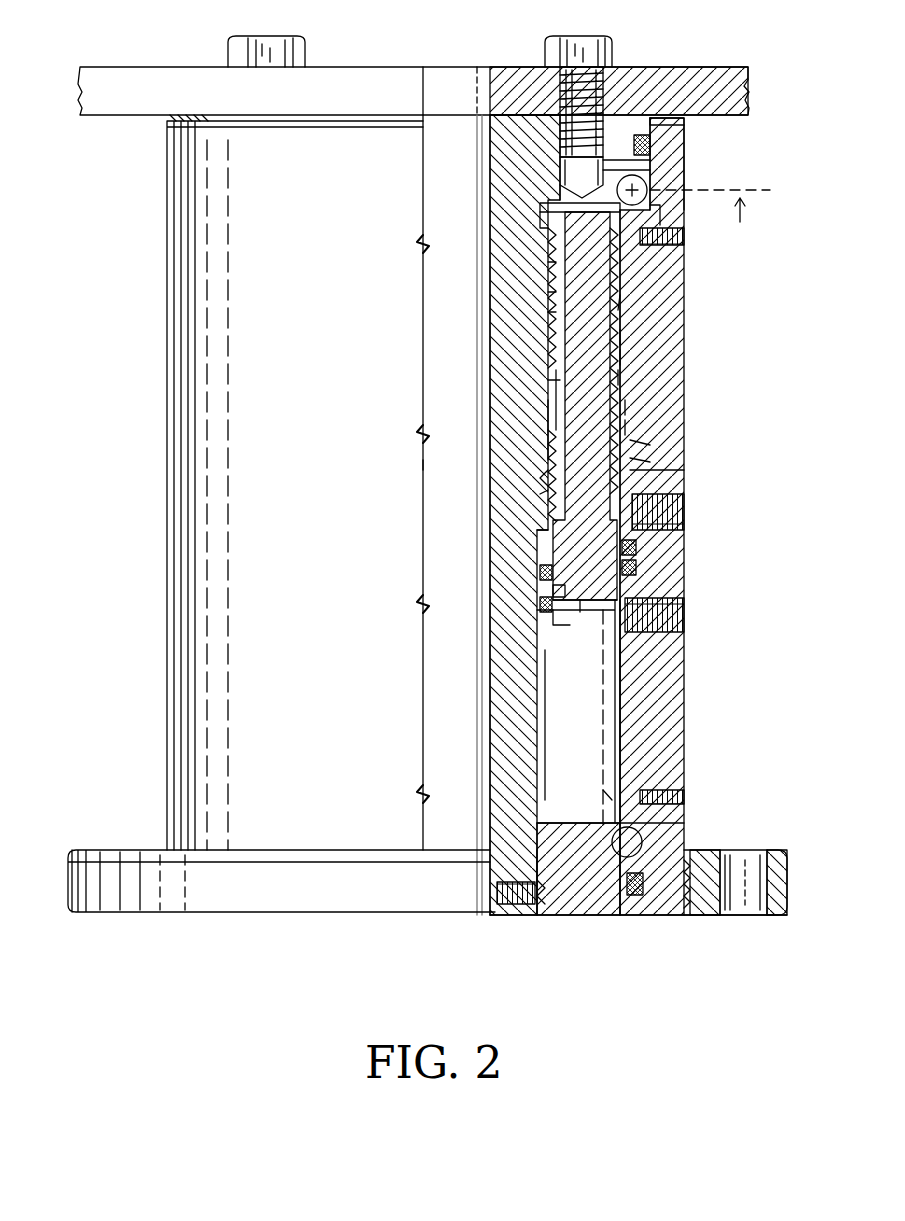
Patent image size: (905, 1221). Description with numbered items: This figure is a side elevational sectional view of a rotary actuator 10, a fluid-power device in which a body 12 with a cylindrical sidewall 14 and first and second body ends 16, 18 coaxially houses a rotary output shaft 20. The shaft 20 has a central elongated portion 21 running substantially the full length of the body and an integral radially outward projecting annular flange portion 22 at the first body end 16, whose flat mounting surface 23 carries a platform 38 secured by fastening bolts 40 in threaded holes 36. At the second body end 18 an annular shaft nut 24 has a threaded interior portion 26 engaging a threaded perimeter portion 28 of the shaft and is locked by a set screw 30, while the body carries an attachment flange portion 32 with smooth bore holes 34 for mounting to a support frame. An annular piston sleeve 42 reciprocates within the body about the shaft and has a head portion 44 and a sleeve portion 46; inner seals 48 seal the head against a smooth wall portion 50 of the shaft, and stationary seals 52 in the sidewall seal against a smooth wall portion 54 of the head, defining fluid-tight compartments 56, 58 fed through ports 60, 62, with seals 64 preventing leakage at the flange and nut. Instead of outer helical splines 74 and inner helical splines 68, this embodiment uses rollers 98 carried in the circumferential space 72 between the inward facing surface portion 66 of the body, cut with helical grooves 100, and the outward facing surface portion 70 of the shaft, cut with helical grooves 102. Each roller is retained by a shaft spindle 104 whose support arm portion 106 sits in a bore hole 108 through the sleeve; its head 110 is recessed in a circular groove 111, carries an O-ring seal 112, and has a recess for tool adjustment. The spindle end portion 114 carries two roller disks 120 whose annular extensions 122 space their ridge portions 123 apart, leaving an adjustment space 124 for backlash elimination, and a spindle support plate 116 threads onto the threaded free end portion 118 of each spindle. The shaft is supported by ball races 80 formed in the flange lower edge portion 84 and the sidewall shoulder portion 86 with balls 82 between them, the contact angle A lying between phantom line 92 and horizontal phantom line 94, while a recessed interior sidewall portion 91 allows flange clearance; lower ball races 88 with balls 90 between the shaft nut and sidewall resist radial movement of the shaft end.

The rotary actuator 10 is at (130, 445).
The body 12 is at (640, 680).
The cylindrical sidewall 14 is at (655, 710).
The first body end 16 is at (665, 112).
The second body end 18 is at (660, 915).
The rotary output shaft 20 is at (545, 455).
The central elongated portion 21 is at (545, 430).
The annular flange portion 22 is at (215, 120).
The mounting surface 23 is at (500, 100).
The shaft nut 24 is at (582, 900).
The threaded interior portion 26 is at (545, 910).
The threaded perimeter portion 28 is at (525, 910).
The set screw 30 is at (505, 910).
The attachment flange portion 32 is at (250, 905).
The smooth bore holes 34 is at (745, 900).
The threaded holes 36 is at (605, 125).
The platform 38 is at (375, 70).
The fastening bolts 40 is at (236, 45).
The piston sleeve 42 is at (590, 400).
The head portion 44 is at (560, 615).
The sleeve portion 46 is at (540, 405).
The inner seals 48 is at (540, 570).
The smooth wall portion 50 is at (537, 728).
The stationary seals 52 is at (636, 568).
The smooth wall portion 54 is at (650, 472).
The fluid-tight compartment 56 is at (540, 525).
The fluid-tight compartment 58 is at (598, 762).
The port 60 is at (660, 512).
The port 62 is at (660, 615).
The seals 64 is at (635, 897).
The inward facing surface portion 66 is at (630, 445).
The inner helical splines 68 is at (630, 462).
The outward facing surface portion 70 is at (548, 492).
The circumferential space 72 is at (550, 200).
The outer helical splines 74 is at (548, 478).
The ball race 80 is at (540, 190).
The balls 82 is at (648, 186).
The lower edge portion 84 is at (648, 145).
The shoulder portion 86 is at (672, 236).
The ball race 88 is at (622, 832).
The balls 90 is at (642, 842).
The recessed interior sidewall portion 91 is at (665, 128).
The phantom line 92 is at (745, 190).
The phantom line 94 is at (708, 297).
The rollers 98 is at (620, 300).
The helical grooves 100 is at (620, 350).
The helical grooves 102 is at (553, 370).
The shaft spindles 104 is at (618, 370).
The support arm portion 106 is at (625, 425).
The bore holes 108 is at (625, 405).
The head 110 is at (560, 640).
The circular groove 111 is at (565, 625).
The O-ring seal 112 is at (540, 602).
The spindle end portion 114 is at (620, 330).
The spindle support plate 116 is at (545, 208).
The threaded free end portion 118 is at (548, 228).
The roller disks 120 is at (553, 262).
The annular extensions 122 is at (552, 240).
The ridge portion 123 is at (548, 283).
The adjustment space 124 is at (553, 292).